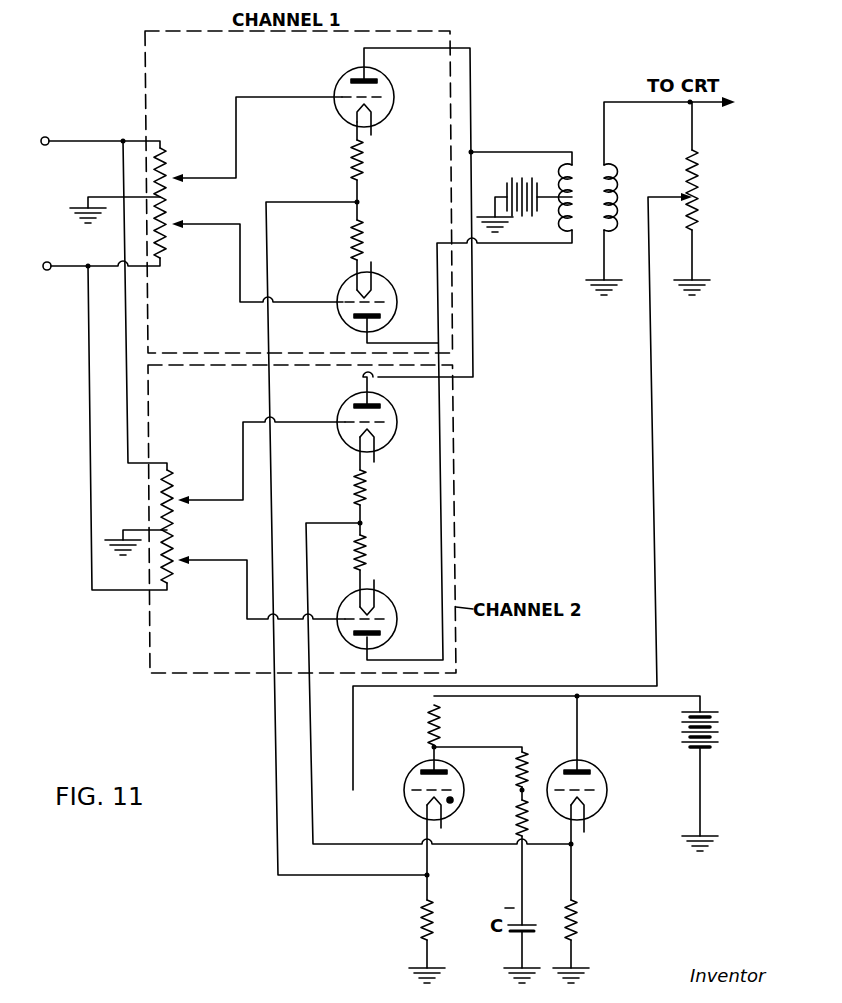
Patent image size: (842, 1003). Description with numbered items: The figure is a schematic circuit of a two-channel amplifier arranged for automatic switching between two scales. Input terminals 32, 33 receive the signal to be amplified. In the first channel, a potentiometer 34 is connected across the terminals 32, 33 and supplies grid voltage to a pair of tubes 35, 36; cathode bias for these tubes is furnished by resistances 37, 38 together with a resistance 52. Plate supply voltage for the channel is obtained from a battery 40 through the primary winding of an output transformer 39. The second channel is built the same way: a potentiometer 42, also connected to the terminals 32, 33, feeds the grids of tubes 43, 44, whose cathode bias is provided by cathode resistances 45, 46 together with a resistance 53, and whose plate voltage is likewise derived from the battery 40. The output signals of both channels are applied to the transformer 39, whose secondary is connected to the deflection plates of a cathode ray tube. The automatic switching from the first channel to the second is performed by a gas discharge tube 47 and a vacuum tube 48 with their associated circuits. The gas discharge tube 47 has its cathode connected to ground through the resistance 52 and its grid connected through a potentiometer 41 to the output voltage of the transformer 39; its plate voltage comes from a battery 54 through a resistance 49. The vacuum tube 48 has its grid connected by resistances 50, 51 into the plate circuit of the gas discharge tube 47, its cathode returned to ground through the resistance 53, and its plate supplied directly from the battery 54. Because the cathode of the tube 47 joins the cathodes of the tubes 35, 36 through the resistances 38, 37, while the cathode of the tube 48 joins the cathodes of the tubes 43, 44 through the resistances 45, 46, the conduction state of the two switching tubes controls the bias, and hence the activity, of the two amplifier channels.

The input terminal 32 is at (50, 130).
The input terminal 33 is at (47, 261).
The potentiometer 34 is at (167, 200).
The tube 35 is at (392, 88).
The tube 36 is at (397, 302).
The resistance 37 is at (369, 237).
The resistance 38 is at (369, 160).
The output transformer 39 is at (588, 167).
The battery 40 is at (524, 196).
The potentiometer 41 is at (700, 195).
The potentiometer 42 is at (174, 528).
The tube 43 is at (398, 420).
The tube 44 is at (394, 615).
The cathode resistance 45 is at (366, 487).
The cathode resistance 46 is at (368, 553).
The gas discharge tube 47 is at (463, 797).
The vacuum tube 48 is at (607, 790).
The resistance 49 is at (439, 720).
The resistance 50 is at (508, 769).
The resistance 51 is at (520, 824).
The resistance 52 is at (435, 920).
The resistance 53 is at (578, 938).
The battery 54 is at (712, 729).